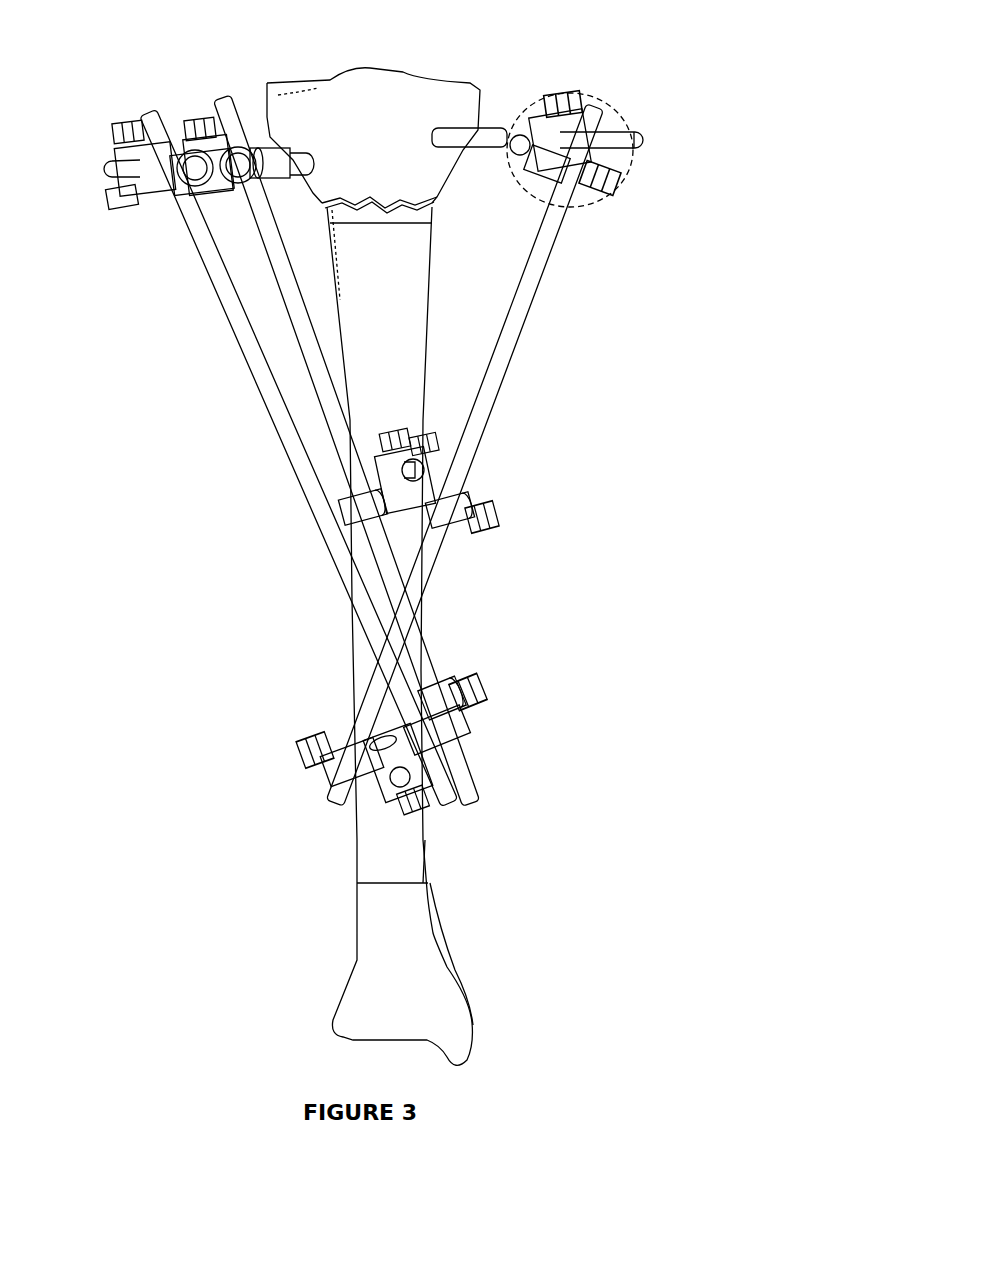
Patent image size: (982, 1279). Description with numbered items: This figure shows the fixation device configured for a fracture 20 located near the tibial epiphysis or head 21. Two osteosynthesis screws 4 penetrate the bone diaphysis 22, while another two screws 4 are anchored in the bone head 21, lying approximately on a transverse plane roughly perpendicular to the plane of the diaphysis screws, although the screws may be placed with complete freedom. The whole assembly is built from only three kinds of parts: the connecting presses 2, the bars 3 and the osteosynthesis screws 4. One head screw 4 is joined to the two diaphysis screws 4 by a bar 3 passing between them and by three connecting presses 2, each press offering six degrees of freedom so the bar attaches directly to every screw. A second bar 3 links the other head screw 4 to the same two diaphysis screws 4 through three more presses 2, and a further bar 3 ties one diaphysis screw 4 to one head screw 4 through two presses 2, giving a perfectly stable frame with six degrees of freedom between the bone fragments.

The connecting press 2 is at (590, 95).
The bar 3 is at (518, 317).
The osteosynthesis screw 4 is at (422, 470).
The fracture 20 is at (385, 195).
The tibial epiphysis or head 21 is at (407, 112).
The bone diaphysis 22 is at (383, 265).